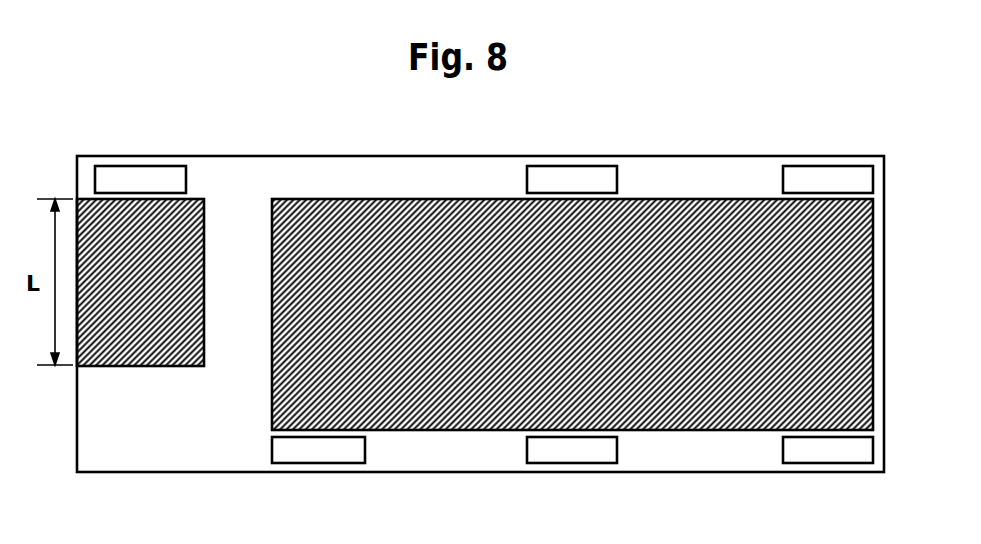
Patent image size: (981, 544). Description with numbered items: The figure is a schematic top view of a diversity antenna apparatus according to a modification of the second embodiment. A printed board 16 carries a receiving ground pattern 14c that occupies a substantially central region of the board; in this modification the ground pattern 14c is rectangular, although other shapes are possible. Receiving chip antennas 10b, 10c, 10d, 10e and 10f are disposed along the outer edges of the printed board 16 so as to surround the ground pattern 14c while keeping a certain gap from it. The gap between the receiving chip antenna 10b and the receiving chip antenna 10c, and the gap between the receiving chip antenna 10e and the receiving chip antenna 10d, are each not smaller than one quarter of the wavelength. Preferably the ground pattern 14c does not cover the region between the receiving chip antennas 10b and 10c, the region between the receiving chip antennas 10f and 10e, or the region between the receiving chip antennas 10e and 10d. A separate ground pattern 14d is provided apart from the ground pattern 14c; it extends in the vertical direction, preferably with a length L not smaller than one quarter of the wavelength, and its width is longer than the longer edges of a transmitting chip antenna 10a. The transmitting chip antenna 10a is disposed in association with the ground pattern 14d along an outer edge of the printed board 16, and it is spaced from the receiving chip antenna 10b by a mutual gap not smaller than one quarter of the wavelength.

The printed board 16 is at (76, 440).
The receiving ground pattern 14c is at (870, 316).
The ground pattern 14d is at (135, 358).
The transmitting chip antenna 10a is at (142, 166).
The receiving chip antenna 10b is at (575, 166).
The receiving chip antenna 10c is at (832, 166).
The receiving chip antenna 10d is at (832, 463).
The receiving chip antenna 10e is at (575, 463).
The receiving chip antenna 10f is at (322, 463).